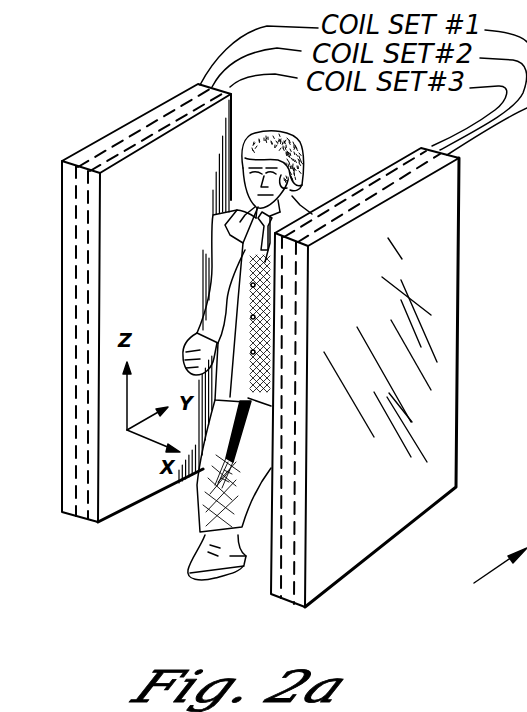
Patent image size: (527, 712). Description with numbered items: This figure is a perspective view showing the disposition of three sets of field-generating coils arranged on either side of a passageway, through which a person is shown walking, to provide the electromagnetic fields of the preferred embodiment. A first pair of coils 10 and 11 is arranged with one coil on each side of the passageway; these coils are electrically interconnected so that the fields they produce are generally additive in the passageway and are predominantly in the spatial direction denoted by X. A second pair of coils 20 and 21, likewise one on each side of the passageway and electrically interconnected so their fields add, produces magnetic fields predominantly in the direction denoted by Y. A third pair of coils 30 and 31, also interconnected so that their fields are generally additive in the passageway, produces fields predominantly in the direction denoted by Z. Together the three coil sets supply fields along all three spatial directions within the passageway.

The coil 10 is at (65, 513).
The coil 20 is at (83, 522).
The coil 30 is at (97, 527).
The coil 11 is at (295, 604).
The coil 21 is at (284, 601).
The coil 31 is at (277, 596).